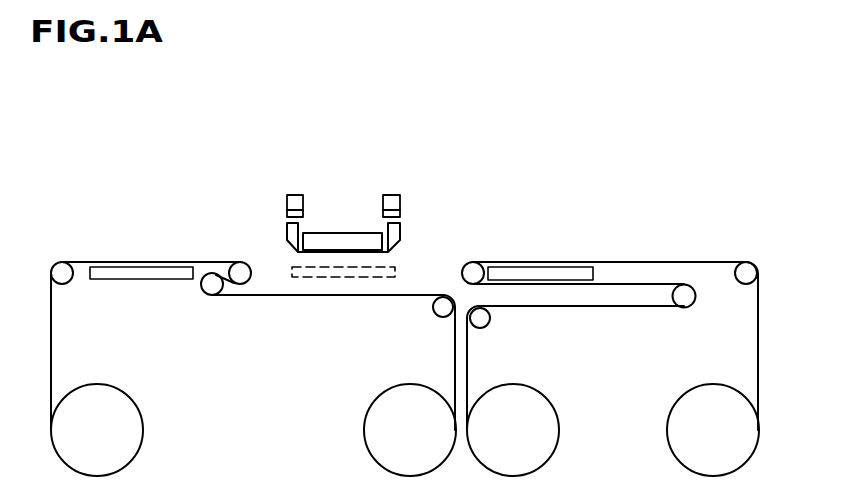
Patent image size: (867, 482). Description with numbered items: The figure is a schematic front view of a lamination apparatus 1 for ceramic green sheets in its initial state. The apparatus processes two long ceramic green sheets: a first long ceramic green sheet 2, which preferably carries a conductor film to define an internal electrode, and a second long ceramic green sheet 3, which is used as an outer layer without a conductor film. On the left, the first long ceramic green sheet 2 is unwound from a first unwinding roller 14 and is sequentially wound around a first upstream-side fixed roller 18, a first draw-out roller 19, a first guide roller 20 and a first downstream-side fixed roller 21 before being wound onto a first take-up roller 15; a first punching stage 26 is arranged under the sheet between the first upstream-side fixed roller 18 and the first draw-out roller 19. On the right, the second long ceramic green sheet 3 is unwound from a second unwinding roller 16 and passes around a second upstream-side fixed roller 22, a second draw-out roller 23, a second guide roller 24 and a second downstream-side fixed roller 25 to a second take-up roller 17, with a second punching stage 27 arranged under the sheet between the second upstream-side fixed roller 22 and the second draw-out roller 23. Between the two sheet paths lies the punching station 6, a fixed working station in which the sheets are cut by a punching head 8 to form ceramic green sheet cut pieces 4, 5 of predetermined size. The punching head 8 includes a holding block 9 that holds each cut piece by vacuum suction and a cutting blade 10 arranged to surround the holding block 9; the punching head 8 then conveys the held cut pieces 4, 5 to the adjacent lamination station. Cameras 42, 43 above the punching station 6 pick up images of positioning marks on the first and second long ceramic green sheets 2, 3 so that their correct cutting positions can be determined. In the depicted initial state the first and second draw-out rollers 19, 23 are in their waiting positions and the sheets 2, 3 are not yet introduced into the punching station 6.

The lamination apparatus 1 is at (105, 100).
The first long ceramic green sheet 2 is at (182, 262).
The second long ceramic green sheet 3 is at (648, 262).
The ceramic green sheet cut piece 4 is at (332, 189).
The ceramic green sheet cut piece 5 is at (332, 189).
The punching station 6 is at (310, 311).
The punching head 8 is at (326, 214).
The holding block 9 is at (353, 240).
The cutting blade 10 is at (292, 230).
The first unwinding roller 14 is at (125, 438).
The first take-up roller 15 is at (378, 442).
The second unwinding roller 16 is at (692, 430).
The second take-up roller 17 is at (542, 445).
The first upstream-side fixed roller 18 is at (62, 268).
The first draw-out roller 19 is at (247, 283).
The first guide roller 20 is at (207, 293).
The first downstream-side fixed roller 21 is at (437, 313).
The second upstream-side fixed roller 22 is at (746, 268).
The second draw-out roller 23 is at (475, 270).
The second guide roller 24 is at (680, 301).
The second downstream-side fixed roller 25 is at (483, 321).
The first punching stage 26 is at (157, 272).
The second punching stage 27 is at (553, 273).
The camera 42 is at (295, 202).
The camera 43 is at (391, 202).